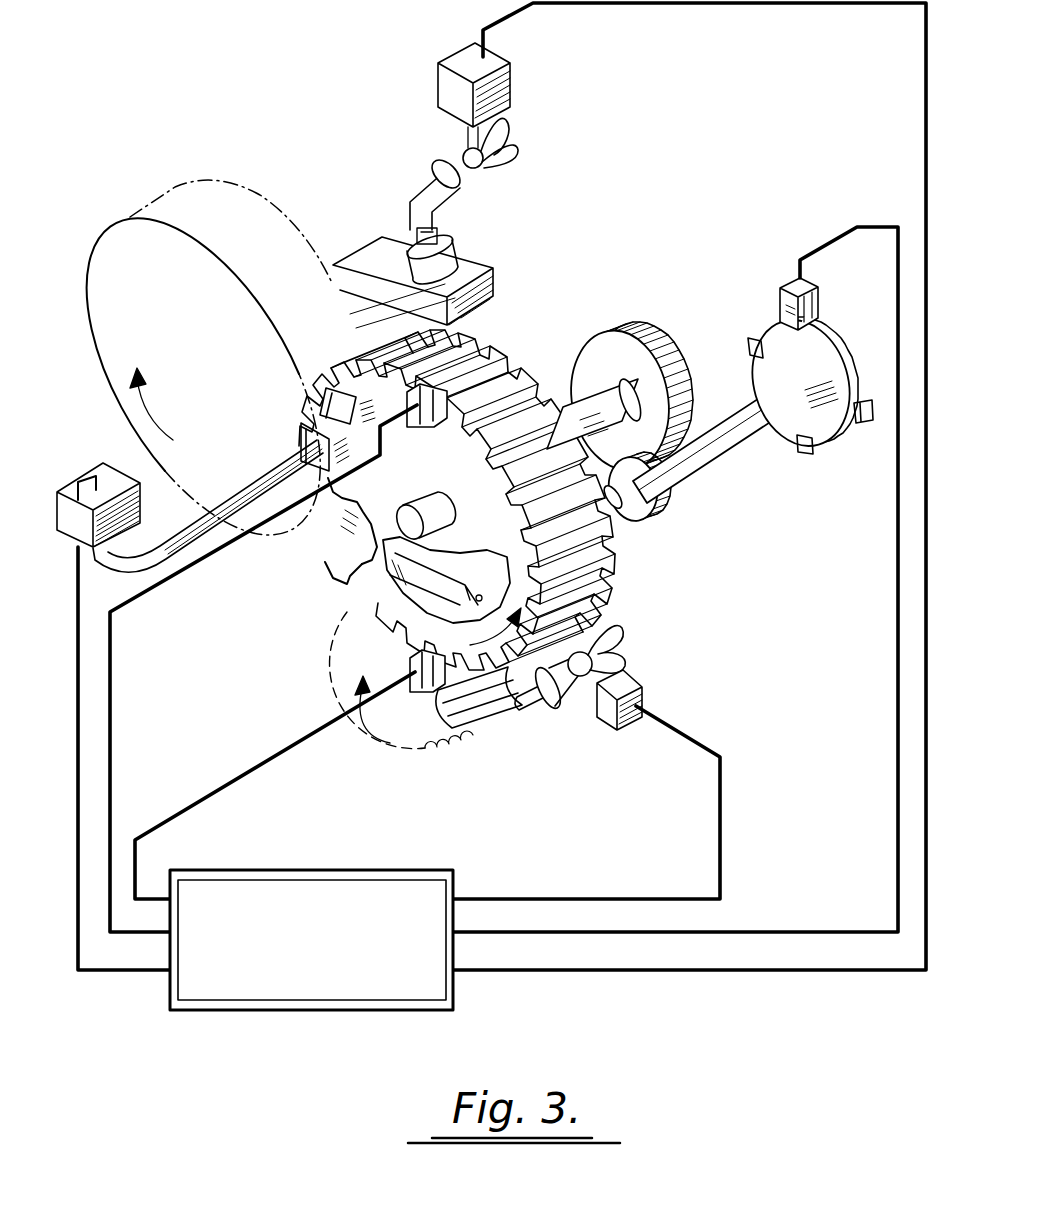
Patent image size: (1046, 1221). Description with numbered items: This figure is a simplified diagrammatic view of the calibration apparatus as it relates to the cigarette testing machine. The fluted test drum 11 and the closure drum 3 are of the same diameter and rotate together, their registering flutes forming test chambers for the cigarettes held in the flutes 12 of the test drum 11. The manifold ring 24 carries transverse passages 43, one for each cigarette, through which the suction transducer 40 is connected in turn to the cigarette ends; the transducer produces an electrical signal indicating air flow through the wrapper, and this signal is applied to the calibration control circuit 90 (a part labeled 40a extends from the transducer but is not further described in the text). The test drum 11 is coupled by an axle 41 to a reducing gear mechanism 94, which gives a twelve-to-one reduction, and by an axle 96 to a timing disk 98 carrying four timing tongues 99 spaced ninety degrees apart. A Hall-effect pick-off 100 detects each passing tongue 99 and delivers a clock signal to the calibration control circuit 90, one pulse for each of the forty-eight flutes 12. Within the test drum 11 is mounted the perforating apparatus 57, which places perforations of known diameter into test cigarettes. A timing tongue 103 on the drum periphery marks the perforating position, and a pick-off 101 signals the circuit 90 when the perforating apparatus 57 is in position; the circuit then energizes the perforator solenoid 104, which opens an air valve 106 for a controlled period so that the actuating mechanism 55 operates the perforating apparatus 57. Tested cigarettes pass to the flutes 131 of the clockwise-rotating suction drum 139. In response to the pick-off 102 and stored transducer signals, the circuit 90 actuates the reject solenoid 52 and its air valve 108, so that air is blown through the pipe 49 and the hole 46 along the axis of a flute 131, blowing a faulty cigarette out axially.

The closure drum 3 is at (203, 347).
The test drum 11 is at (412, 477).
The flutes 12 is at (624, 580).
The manifold ring 24 is at (345, 568).
The suction transducer 40 is at (108, 470).
The sensor rod 40a is at (262, 466).
The axle 41 is at (580, 400).
The transverse passages 43 is at (346, 541).
The hole 46 is at (532, 696).
The pipe 49 is at (547, 710).
The reject solenoid 52 is at (620, 725).
The actuating mechanism 55 is at (450, 252).
The perforating apparatus 57 is at (476, 562).
The calibration control circuit 90 is at (268, 872).
The reducing gear mechanism 94 is at (624, 342).
The axle 96 is at (708, 458).
The timing disk 98 is at (758, 376).
The timing tongues 99 is at (874, 420).
The pick-off 100 is at (792, 284).
The pick-off 101 is at (414, 420).
The pick-off 102 is at (433, 654).
The timing tongue 103 is at (330, 405).
The perforator solenoid 104 is at (460, 60).
The air valve 106 is at (518, 145).
The air valve 108 is at (624, 648).
The flutes 131 is at (452, 742).
The suction drum 139 is at (340, 664).